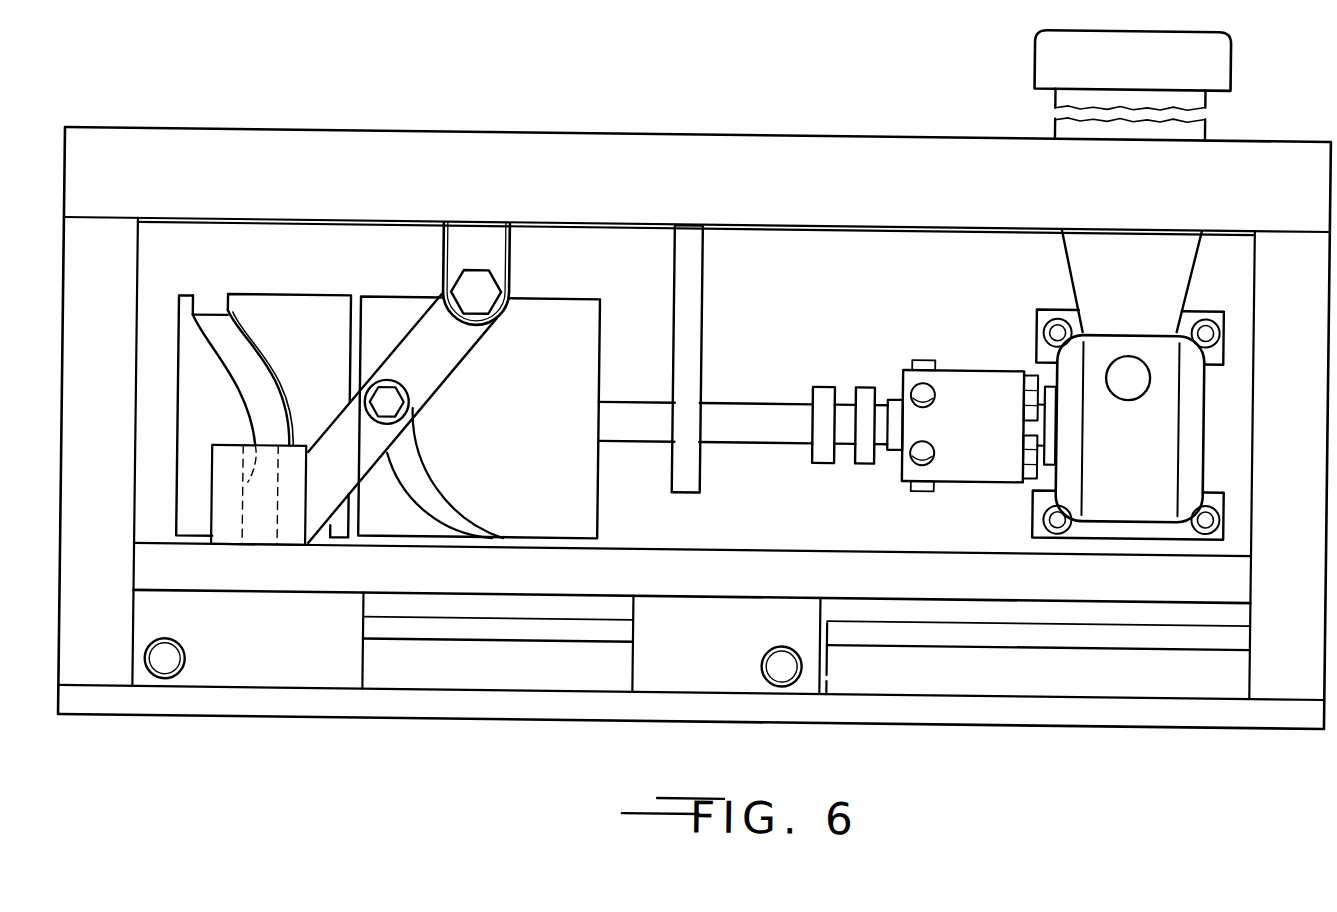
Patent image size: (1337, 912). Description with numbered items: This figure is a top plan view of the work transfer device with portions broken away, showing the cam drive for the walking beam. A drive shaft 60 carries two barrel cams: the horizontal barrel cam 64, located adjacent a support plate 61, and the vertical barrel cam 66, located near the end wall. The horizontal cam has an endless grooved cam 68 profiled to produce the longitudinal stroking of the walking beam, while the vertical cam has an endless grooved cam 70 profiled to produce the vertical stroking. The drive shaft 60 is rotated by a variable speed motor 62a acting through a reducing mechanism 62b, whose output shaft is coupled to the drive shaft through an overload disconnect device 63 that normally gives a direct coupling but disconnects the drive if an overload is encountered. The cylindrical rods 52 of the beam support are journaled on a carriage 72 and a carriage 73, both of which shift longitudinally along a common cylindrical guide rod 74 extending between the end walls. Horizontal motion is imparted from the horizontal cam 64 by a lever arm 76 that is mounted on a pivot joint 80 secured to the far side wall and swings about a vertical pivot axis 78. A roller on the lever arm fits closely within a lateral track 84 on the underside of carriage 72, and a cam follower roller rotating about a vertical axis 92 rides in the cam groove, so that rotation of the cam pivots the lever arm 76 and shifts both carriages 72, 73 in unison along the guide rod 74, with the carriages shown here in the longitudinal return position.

The cylindrical rods 52 is at (172, 659).
The drive shaft 60 is at (722, 419).
The support plate 61 is at (705, 346).
The variable speed motor 62a is at (1198, 102).
The reducing mechanism 62b is at (1212, 430).
The overload disconnect device 63 is at (963, 359).
The barrel cam 64 is at (604, 292).
The barrel cam 66 is at (307, 289).
The endless grooved cam 68 is at (421, 486).
The endless grooved cam 70 is at (256, 371).
The carriage 72 is at (295, 640).
The carriage 73 is at (726, 645).
The guide rod 74 is at (494, 623).
The lever arm 76 is at (452, 328).
The pivot axis 78 is at (480, 285).
The pivot joint 80 is at (532, 266).
The lateral track 84 is at (254, 426).
The vertical axis 92 is at (395, 400).